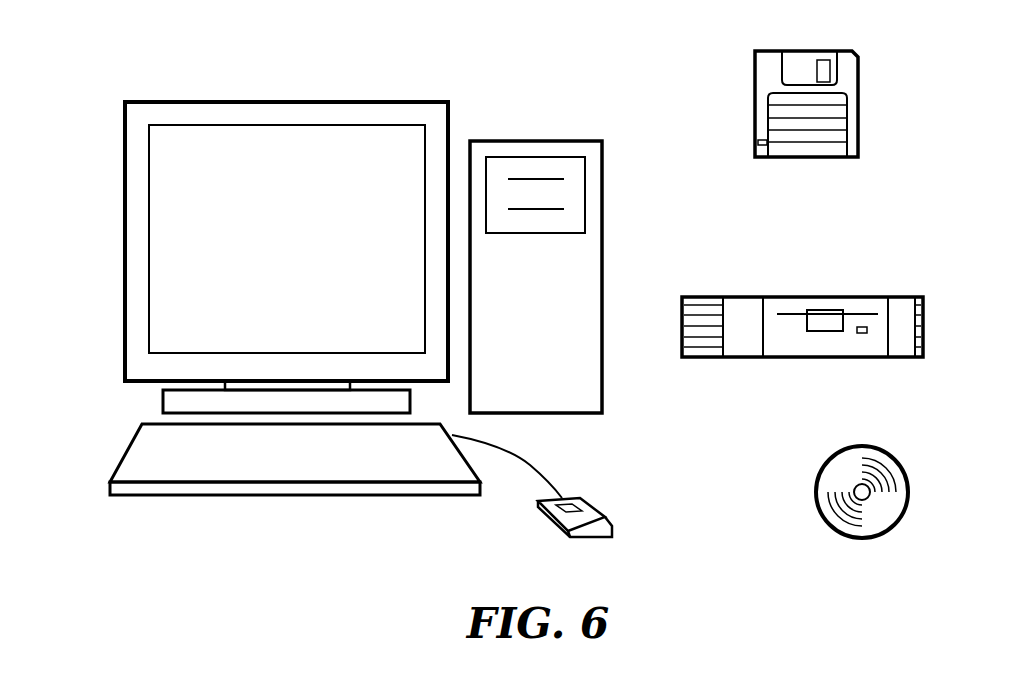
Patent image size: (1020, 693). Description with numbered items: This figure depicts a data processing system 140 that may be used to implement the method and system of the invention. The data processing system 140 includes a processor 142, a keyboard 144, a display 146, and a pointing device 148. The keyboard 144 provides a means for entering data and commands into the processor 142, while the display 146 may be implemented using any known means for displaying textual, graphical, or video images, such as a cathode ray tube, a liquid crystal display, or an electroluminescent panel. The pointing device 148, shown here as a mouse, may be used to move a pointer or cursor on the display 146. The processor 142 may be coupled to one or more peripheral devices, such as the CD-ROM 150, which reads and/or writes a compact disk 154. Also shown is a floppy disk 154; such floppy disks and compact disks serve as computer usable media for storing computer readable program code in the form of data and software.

The data processing system 140 is at (106, 83).
The processor 142 is at (515, 140).
The keyboard 144 is at (138, 423).
The display 146 is at (383, 101).
The pointing device 148 is at (592, 506).
The CD-ROM 150 is at (843, 297).
The floppy disk / compact disk 154 is at (793, 50).